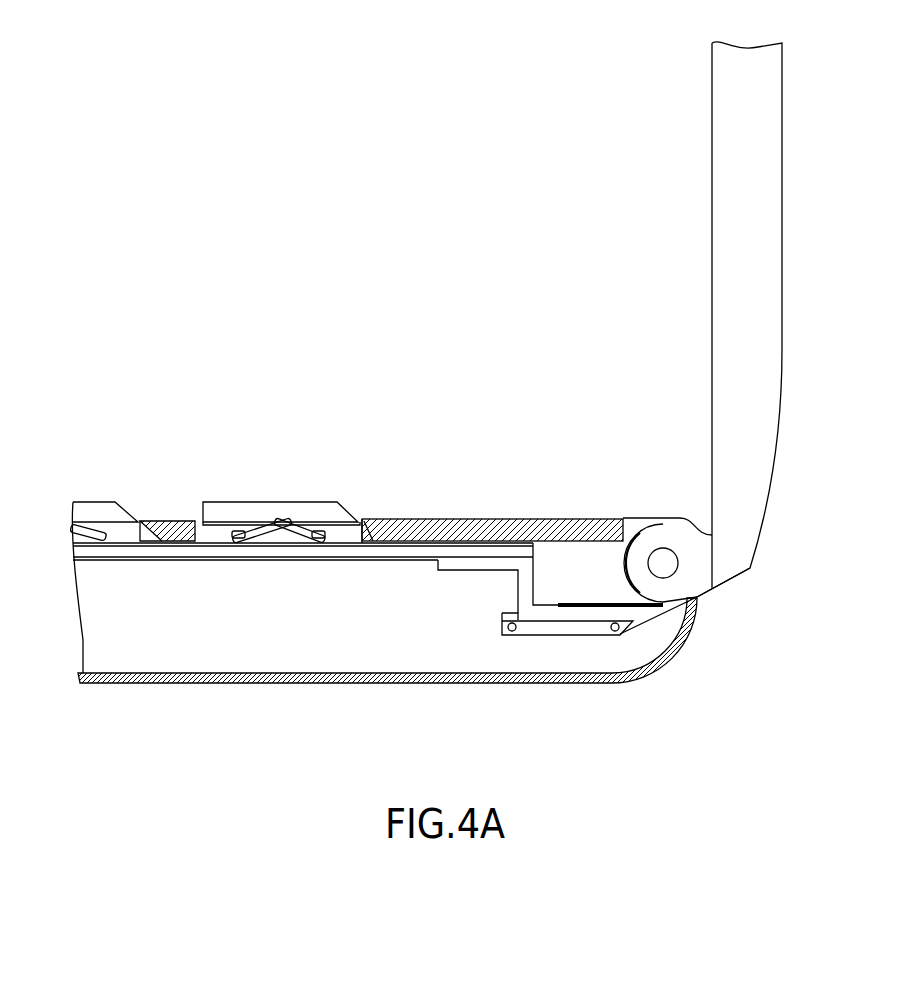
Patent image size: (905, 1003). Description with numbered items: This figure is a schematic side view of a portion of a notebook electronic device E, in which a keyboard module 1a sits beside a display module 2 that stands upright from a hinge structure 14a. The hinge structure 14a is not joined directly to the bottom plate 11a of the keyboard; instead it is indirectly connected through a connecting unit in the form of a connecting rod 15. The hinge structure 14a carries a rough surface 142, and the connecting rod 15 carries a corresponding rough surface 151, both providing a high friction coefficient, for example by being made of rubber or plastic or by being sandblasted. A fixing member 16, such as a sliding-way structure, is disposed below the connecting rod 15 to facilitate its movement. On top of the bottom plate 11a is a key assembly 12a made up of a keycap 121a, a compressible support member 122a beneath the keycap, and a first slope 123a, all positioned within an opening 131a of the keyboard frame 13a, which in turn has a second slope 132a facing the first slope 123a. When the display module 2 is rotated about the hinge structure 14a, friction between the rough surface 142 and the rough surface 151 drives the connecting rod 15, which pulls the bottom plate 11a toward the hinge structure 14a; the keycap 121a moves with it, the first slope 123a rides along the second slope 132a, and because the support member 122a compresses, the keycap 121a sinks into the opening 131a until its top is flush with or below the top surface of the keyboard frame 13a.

The electronic device E is at (181, 251).
The display module 2 is at (737, 283).
The base unit 1a is at (151, 456).
The bottom plate 11a is at (283, 552).
The opening 131a is at (198, 516).
The lifting assembly 12a is at (298, 480).
The keycap 121a is at (295, 516).
The support member 122a is at (247, 520).
The first slope 123a is at (334, 499).
The second slope 132a is at (367, 530).
The keyboard frame 13a is at (478, 520).
The hinge structure 14a is at (665, 550).
The connecting rod 15 is at (480, 562).
The fixing member 16 is at (567, 625).
The rough surface 142 is at (697, 597).
The rough surface 151 is at (678, 637).